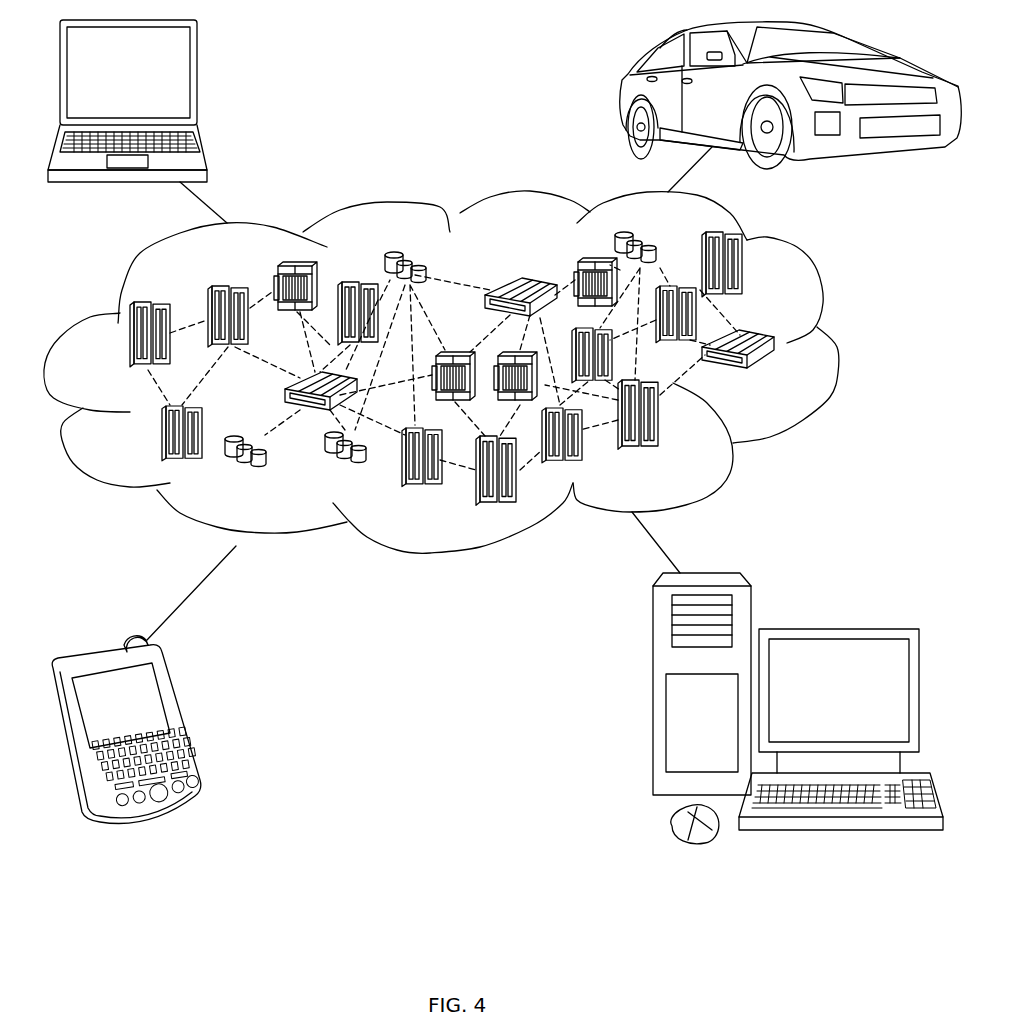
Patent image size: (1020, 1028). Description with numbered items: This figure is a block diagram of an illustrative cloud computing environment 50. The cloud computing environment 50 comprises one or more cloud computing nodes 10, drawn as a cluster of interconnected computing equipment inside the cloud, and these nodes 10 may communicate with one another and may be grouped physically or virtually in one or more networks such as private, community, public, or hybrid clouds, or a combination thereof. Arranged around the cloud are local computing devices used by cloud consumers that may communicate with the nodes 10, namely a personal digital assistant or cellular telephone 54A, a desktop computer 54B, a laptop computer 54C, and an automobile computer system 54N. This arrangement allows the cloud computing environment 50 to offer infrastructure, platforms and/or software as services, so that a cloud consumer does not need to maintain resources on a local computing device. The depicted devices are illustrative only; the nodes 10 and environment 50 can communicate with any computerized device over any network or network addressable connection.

The cloud computing node 10 is at (778, 375).
The cloud computing environment 50 is at (838, 345).
The personal digital assistant or cellular telephone 54A is at (185, 718).
The desktop computer 54B is at (838, 629).
The laptop computer 54C is at (195, 82).
The automobile computer system 54N is at (622, 97).